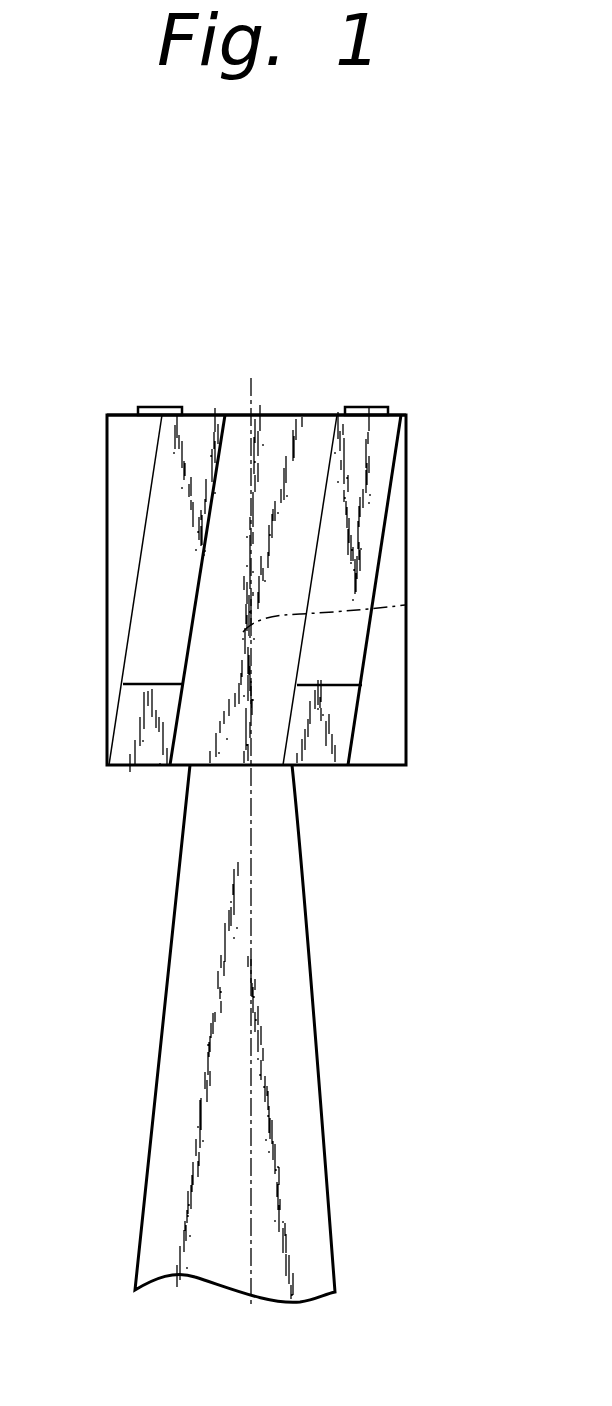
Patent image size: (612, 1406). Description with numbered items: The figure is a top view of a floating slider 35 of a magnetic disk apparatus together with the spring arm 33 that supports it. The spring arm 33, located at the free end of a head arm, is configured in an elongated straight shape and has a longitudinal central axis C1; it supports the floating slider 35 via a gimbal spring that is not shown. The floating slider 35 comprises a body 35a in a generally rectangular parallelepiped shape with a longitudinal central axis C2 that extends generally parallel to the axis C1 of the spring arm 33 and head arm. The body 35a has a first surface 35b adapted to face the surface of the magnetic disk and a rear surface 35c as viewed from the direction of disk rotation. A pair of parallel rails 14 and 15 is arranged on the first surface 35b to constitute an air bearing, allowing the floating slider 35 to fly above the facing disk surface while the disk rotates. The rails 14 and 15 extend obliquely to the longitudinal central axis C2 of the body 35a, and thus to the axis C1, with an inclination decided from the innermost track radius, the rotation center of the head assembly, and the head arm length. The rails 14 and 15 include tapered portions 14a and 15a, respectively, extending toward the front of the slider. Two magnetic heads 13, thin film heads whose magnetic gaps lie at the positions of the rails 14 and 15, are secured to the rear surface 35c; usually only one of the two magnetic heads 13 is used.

The magnetic head 13 is at (158, 405).
The rail 14 is at (390, 460).
The tapered portion 14a is at (320, 752).
The rail 15 is at (148, 547).
The tapered portion 15a is at (122, 748).
The spring arm 33 is at (310, 1108).
The floating slider 35 is at (417, 482).
The body 35a is at (406, 680).
The first surface 35b is at (380, 745).
The rear surface 35c is at (275, 415).
The longitudinal central axis C1 is at (250, 976).
The longitudinal central axis C2 is at (405, 605).